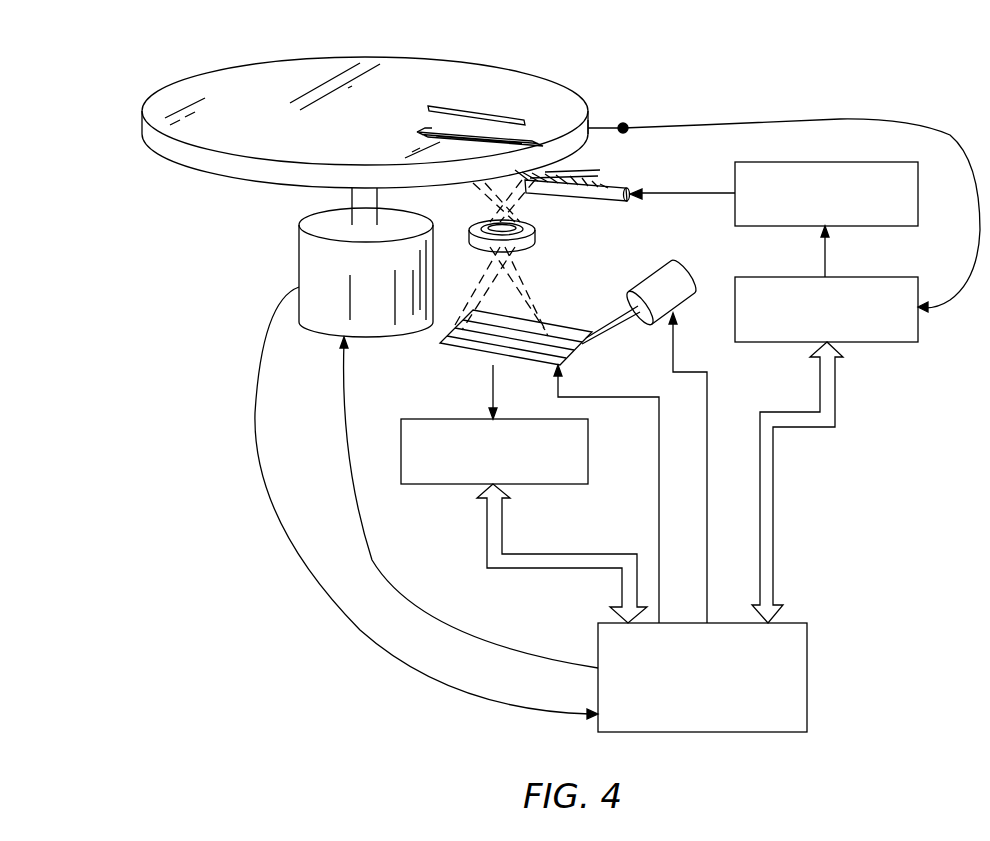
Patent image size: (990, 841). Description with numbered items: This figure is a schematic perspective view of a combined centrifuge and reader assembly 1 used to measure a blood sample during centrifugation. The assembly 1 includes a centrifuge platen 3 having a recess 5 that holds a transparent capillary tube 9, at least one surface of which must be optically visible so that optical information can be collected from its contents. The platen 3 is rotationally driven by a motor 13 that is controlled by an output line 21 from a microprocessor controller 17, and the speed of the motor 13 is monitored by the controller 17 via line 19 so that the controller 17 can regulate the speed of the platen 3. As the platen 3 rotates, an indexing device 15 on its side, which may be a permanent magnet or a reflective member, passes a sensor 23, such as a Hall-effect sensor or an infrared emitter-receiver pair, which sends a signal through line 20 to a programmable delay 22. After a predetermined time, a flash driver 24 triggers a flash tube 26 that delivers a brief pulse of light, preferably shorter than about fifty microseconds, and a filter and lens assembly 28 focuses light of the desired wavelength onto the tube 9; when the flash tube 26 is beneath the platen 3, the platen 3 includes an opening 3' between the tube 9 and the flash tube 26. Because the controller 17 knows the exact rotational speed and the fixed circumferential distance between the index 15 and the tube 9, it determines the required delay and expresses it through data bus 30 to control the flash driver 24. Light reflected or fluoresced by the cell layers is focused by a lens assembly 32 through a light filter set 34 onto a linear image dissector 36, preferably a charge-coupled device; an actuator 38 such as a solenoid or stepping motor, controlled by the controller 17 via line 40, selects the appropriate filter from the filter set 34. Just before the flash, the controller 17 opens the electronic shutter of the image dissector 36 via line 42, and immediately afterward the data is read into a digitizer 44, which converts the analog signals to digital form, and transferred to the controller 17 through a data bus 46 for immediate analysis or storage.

The combined centrifuge and reader assembly 1 is at (545, 48).
The centrifuge platen 3 is at (365, 94).
The opening 3' is at (405, 127).
The recess 5 is at (470, 132).
The transparent capillary tube 9 is at (500, 115).
The motor 13 is at (299, 250).
The indexing device 15 is at (590, 128).
The microprocessor controller 17 is at (807, 670).
The line 19 is at (255, 450).
The line 20 is at (850, 118).
The output line 21 is at (397, 565).
The programmable delay 22 is at (893, 342).
The sensor 23 is at (625, 126).
The flash driver 24 is at (905, 220).
The flash tube 26 is at (632, 192).
The filter and lens assembly 28 is at (605, 183).
The data bus 30 is at (835, 418).
The lens assembly 32 is at (535, 232).
The light filter set 34 is at (555, 325).
The linear image dissector 36 is at (452, 348).
The actuator 38 is at (680, 286).
The line 40 is at (707, 510).
The line 42 is at (657, 475).
The digitizer 44 is at (540, 478).
The data bus 46 is at (594, 563).